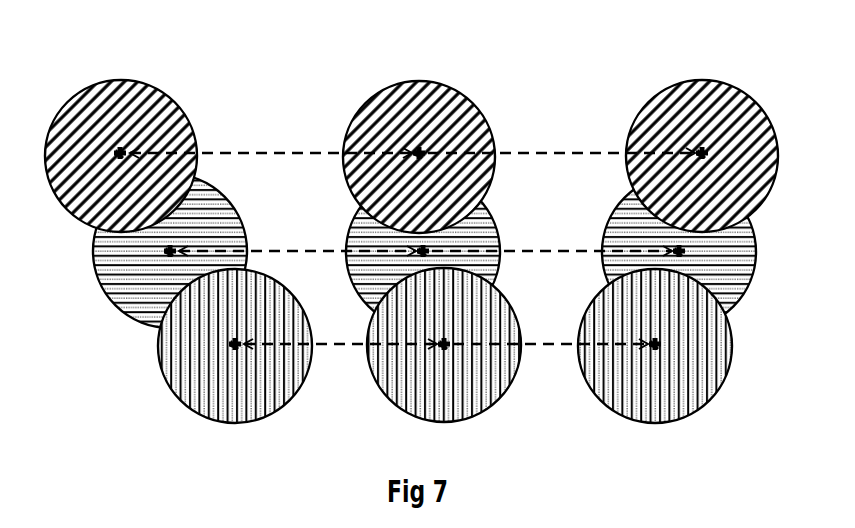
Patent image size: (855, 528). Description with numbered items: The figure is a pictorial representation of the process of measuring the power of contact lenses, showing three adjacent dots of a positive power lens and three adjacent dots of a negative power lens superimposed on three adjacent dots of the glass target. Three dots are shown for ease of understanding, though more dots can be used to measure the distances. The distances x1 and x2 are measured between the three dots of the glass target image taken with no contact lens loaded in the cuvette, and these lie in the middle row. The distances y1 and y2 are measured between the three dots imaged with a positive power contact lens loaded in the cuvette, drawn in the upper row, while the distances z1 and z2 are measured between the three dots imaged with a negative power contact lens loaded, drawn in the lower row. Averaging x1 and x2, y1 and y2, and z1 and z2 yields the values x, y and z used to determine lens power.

The distance between dots with positive power lens y1 is at (271, 140).
The distance between dots with positive power lens y2 is at (561, 140).
The distance between dots with no lens x1 is at (297, 241).
The distance between dots with no lens x2 is at (552, 241).
The distance between dots with negative power lens z1 is at (340, 335).
The distance between dots with negative power lens z2 is at (550, 335).